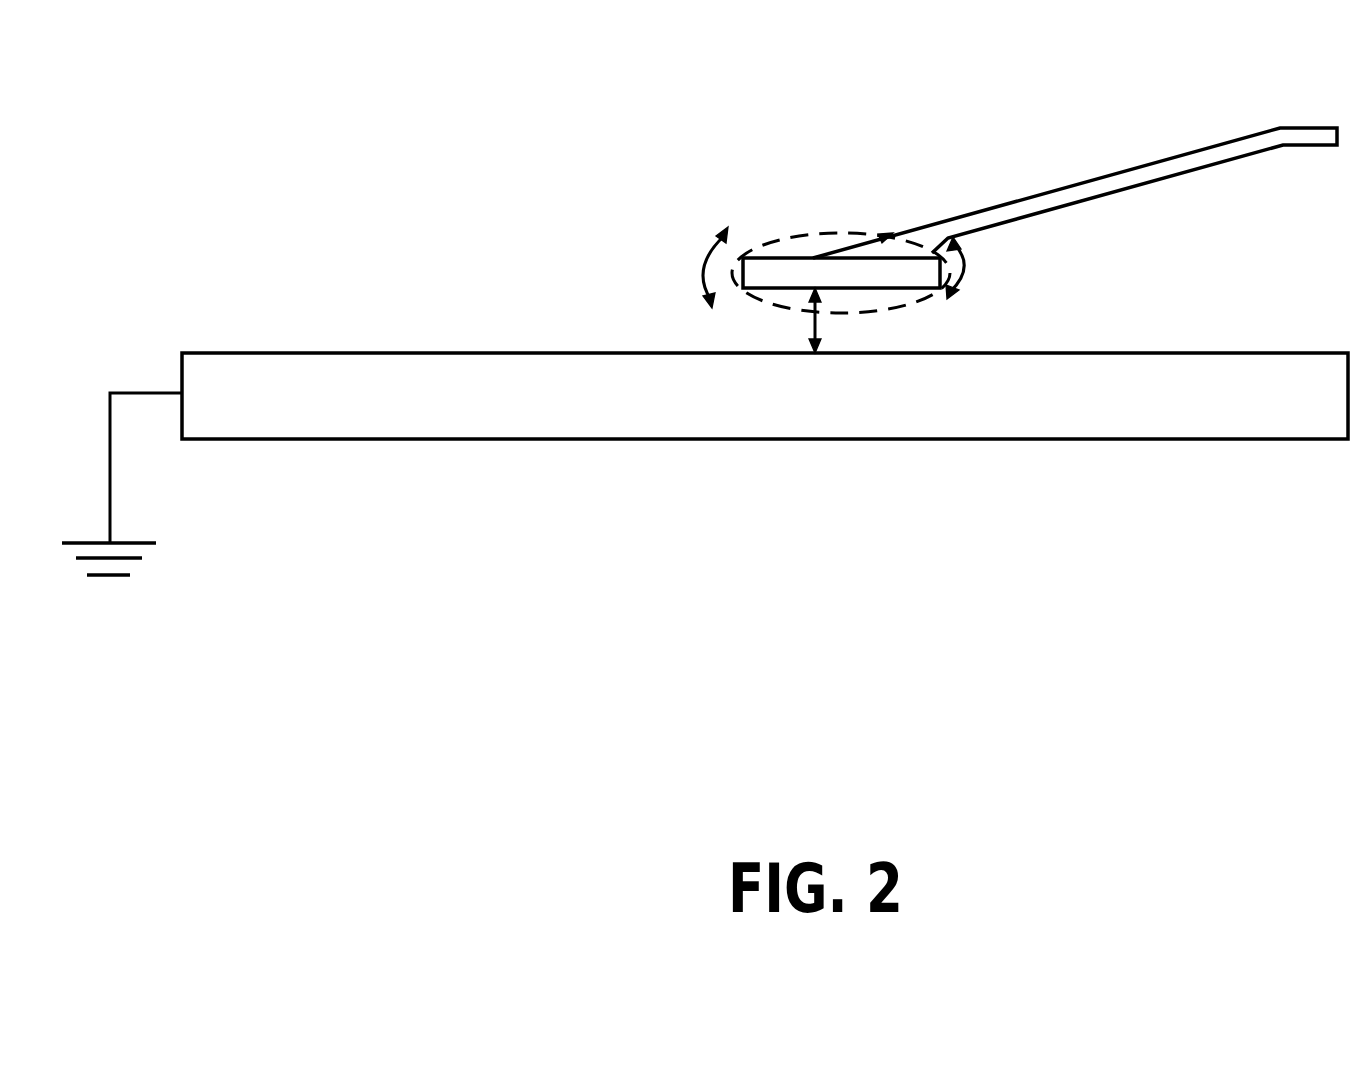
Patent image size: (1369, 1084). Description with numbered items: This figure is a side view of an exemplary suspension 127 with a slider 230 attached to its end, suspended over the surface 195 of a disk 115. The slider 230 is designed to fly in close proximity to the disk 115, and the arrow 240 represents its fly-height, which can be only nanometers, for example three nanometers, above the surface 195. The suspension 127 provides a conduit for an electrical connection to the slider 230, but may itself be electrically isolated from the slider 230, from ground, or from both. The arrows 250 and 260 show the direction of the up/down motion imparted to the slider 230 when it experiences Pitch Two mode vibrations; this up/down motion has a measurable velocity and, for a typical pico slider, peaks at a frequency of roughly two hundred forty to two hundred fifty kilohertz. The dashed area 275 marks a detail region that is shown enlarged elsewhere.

The disk 115 is at (835, 410).
The suspension 127 is at (1017, 199).
The surface of disk 195 is at (373, 353).
The slider 230 is at (787, 258).
The arrow representing fly-height 240 is at (800, 308).
The arrow showing up/down motion 250 is at (705, 262).
The arrow showing up/down motion 260 is at (963, 265).
The area of detail 275 is at (833, 232).